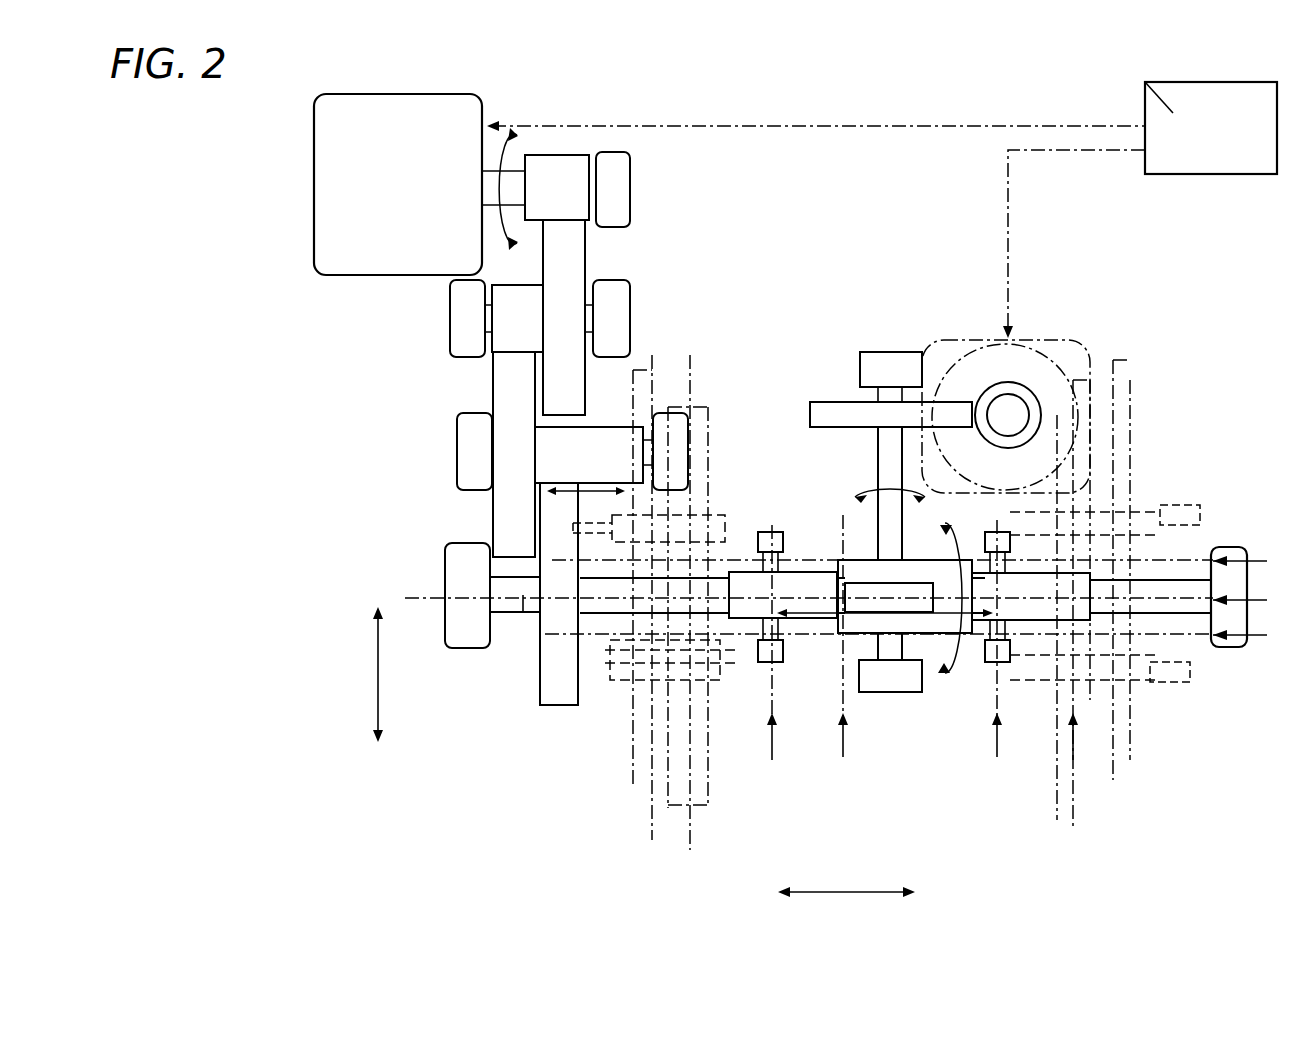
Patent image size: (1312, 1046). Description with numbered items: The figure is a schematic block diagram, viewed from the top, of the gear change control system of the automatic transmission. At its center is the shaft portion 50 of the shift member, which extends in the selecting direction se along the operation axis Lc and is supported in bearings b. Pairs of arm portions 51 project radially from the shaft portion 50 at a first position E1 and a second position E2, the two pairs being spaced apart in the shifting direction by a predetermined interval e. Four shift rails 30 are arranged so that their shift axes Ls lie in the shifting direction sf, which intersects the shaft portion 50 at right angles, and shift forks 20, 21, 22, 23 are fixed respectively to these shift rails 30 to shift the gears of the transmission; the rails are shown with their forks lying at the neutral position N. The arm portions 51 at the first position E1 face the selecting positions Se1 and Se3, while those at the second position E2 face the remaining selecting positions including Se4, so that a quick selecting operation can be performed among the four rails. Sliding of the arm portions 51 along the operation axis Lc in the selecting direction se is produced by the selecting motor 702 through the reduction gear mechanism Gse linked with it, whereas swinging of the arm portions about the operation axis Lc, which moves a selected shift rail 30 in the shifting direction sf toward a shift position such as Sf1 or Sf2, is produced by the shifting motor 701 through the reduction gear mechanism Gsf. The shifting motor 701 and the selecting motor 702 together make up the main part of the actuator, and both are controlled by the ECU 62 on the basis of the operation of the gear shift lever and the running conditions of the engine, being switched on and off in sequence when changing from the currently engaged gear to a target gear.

The shifting motor 701 is at (403, 252).
The selecting motor 702 is at (1077, 337).
The ECU 62 is at (1145, 82).
The shift fork 20 is at (896, 644).
The shift fork portion 21 is at (765, 530).
The shift fork 22 is at (1172, 683).
The shift fork 23 is at (1200, 497).
The shift rail 30 is at (633, 742).
The shaft portion 50 is at (860, 560).
The arm portions 51 is at (782, 642).
The bearing b is at (623, 212).
The predetermined interval e is at (826, 614).
The first position E1 is at (788, 572).
The second position E2 is at (1017, 606).
The reduction gear mechanism Gsf is at (467, 388).
The reduction gear mechanism Gse is at (943, 396).
The operation axis Lc is at (523, 600).
The shift axis Ls is at (690, 842).
The neutral position N is at (846, 597).
The selecting position Se1 is at (777, 748).
The selecting position Se3 is at (848, 752).
The selecting position Se4 is at (1068, 745).
The first feed position Sf1 is at (927, 638).
The second feed position Sf2 is at (930, 564).
The selecting direction se is at (873, 890).
The shifting direction sf is at (380, 697).